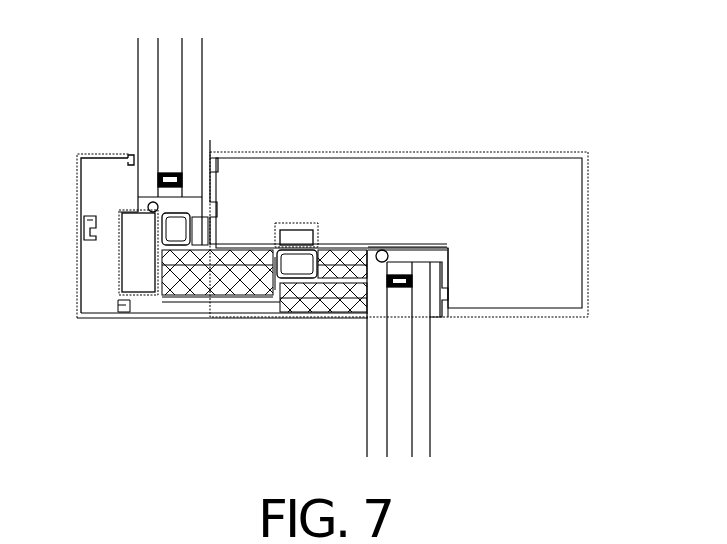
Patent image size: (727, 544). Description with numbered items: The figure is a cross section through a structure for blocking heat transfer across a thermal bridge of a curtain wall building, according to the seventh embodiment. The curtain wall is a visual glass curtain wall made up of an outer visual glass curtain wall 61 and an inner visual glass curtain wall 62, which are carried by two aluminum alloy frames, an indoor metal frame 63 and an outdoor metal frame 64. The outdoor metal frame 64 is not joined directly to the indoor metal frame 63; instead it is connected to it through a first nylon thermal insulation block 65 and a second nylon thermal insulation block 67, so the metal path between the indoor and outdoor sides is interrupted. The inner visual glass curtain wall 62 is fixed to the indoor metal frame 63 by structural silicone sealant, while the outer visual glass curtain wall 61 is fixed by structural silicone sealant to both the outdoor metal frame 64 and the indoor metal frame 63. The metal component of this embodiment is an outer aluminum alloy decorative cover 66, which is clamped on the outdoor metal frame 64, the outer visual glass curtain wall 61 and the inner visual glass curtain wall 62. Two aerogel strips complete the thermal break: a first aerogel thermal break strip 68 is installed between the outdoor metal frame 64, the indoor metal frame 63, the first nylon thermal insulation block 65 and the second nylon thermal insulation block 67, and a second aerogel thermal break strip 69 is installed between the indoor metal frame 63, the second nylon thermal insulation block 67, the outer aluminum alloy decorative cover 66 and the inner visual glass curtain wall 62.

The outer visual glass curtain wall 61 is at (149, 103).
The inner visual glass curtain wall 62 is at (420, 348).
The indoor metal frame 63 is at (583, 196).
The outdoor metal frame 64 is at (118, 291).
The first nylon thermal insulation block 65 is at (176, 231).
The outer aluminum alloy decorative cover 66 is at (80, 186).
The second nylon thermal insulation block 67 is at (293, 265).
The first aerogel thermal break strip 68 is at (177, 287).
The second aerogel thermal break strip 69 is at (316, 296).